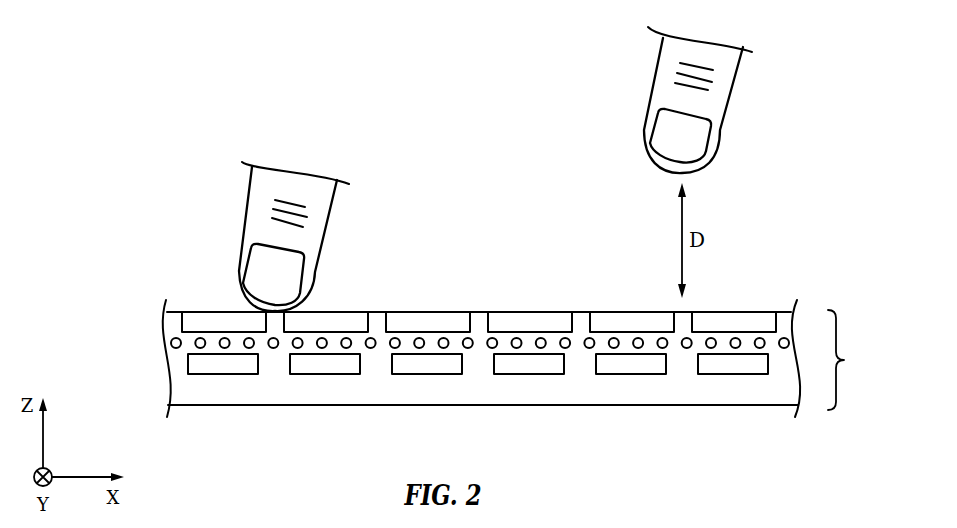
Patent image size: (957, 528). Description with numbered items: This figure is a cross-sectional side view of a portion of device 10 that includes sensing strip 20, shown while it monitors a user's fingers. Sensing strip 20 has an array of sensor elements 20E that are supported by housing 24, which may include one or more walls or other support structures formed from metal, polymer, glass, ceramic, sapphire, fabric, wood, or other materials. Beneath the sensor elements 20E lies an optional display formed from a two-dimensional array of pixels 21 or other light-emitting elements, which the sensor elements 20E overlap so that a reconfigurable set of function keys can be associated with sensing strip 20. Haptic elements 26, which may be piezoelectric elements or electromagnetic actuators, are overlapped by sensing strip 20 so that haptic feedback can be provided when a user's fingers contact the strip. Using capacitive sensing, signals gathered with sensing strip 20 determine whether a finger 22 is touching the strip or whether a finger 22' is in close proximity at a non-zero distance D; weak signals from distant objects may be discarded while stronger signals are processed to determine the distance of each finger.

The device 10 is at (847, 360).
The sensing strip 20 is at (783, 267).
The sensor elements 20E is at (353, 317).
The pixels 21 is at (165, 345).
The finger 22 is at (255, 236).
The finger 22' is at (731, 100).
The housing 24 is at (720, 390).
The haptic elements 26 is at (240, 366).